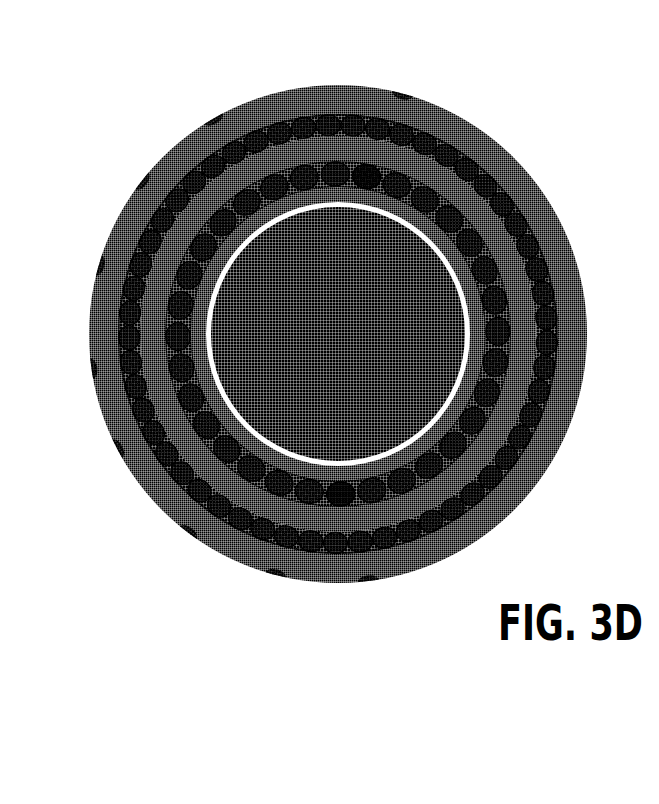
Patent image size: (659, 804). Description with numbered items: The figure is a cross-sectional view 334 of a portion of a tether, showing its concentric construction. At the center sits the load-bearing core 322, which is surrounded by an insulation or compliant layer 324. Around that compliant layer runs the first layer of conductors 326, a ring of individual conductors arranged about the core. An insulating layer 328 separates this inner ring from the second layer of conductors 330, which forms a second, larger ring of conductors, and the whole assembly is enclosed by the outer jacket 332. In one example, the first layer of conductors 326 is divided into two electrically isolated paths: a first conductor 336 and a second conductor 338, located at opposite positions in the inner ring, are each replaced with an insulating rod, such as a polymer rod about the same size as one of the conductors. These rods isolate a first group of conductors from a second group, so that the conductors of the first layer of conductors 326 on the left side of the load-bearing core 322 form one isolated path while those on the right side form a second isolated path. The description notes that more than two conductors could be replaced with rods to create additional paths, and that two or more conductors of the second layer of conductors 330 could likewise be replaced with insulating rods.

The load-bearing core 322 is at (422, 385).
The insulation or compliant layer 324 is at (418, 222).
The first layer of conductors 326 is at (488, 268).
The insulating layer 328 is at (487, 232).
The second layer of conductors 330 is at (543, 276).
The outer jacket 332 is at (495, 158).
The cross-sectional view 334 is at (146, 91).
The first conductor 336 is at (333, 168).
The second conductor 338 is at (343, 500).